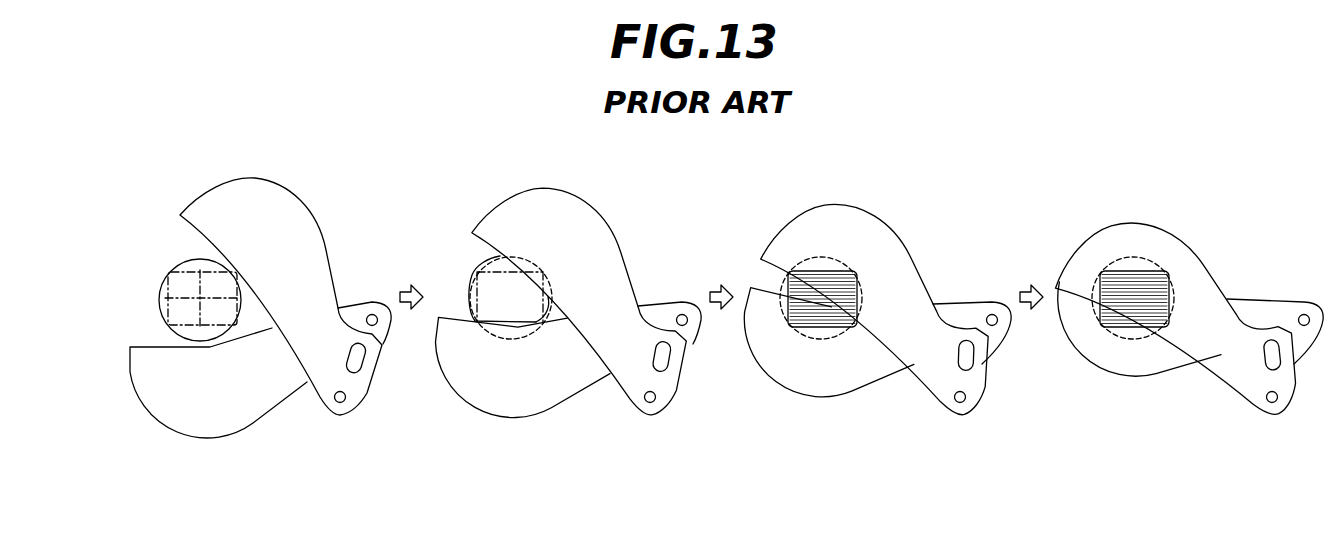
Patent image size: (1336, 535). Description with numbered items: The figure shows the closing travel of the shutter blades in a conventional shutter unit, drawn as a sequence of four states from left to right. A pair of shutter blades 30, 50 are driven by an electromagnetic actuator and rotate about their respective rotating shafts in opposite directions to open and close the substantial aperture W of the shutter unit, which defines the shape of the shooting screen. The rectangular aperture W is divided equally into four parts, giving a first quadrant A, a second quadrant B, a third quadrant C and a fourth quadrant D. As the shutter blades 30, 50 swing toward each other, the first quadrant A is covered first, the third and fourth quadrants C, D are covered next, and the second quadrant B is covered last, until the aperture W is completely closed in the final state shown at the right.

The shutter blade 30 is at (313, 263).
The shutter blade 50 is at (145, 360).
The aperture W is at (160, 296).
The first quadrant A is at (223, 280).
The second quadrant B is at (187, 278).
The third quadrant C is at (190, 312).
The fourth quadrant D is at (215, 312).